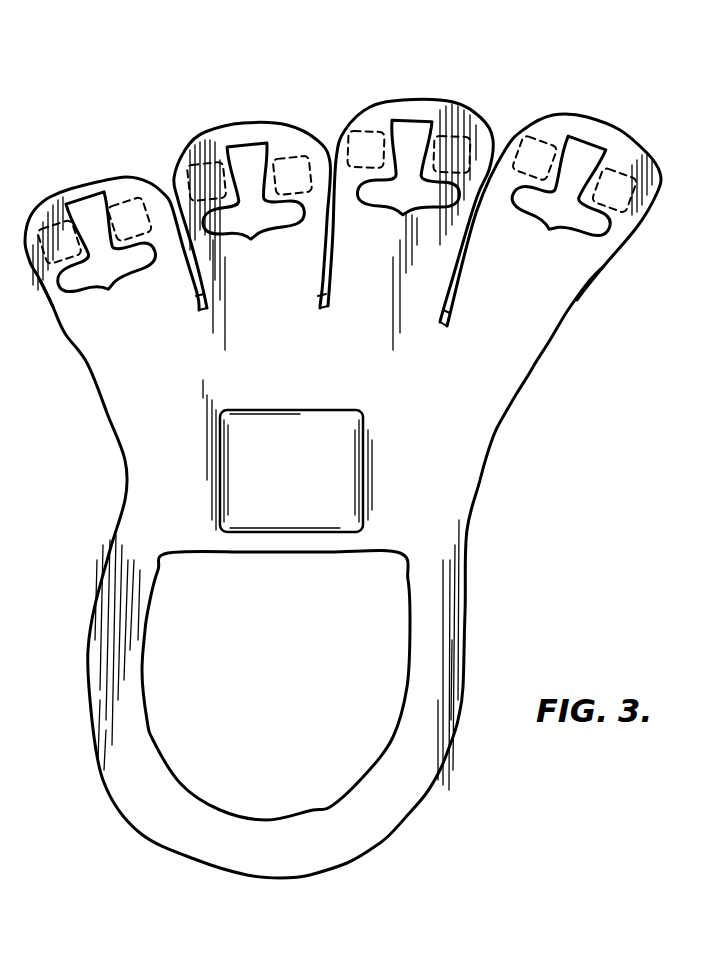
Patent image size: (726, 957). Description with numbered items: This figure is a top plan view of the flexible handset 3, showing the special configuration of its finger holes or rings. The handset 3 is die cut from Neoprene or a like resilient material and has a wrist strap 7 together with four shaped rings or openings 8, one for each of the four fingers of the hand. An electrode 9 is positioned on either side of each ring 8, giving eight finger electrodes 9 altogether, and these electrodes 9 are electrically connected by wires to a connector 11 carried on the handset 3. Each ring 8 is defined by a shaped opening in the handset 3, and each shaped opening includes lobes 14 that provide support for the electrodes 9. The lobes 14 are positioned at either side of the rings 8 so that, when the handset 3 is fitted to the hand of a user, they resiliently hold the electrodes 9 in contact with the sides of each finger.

The flexible handset 3 is at (485, 543).
The wrist strap 7 is at (420, 797).
The shaped rings 8 is at (90, 207).
The electrode 9 is at (183, 170).
The connector 11 is at (333, 468).
The lobes 14 is at (277, 135).